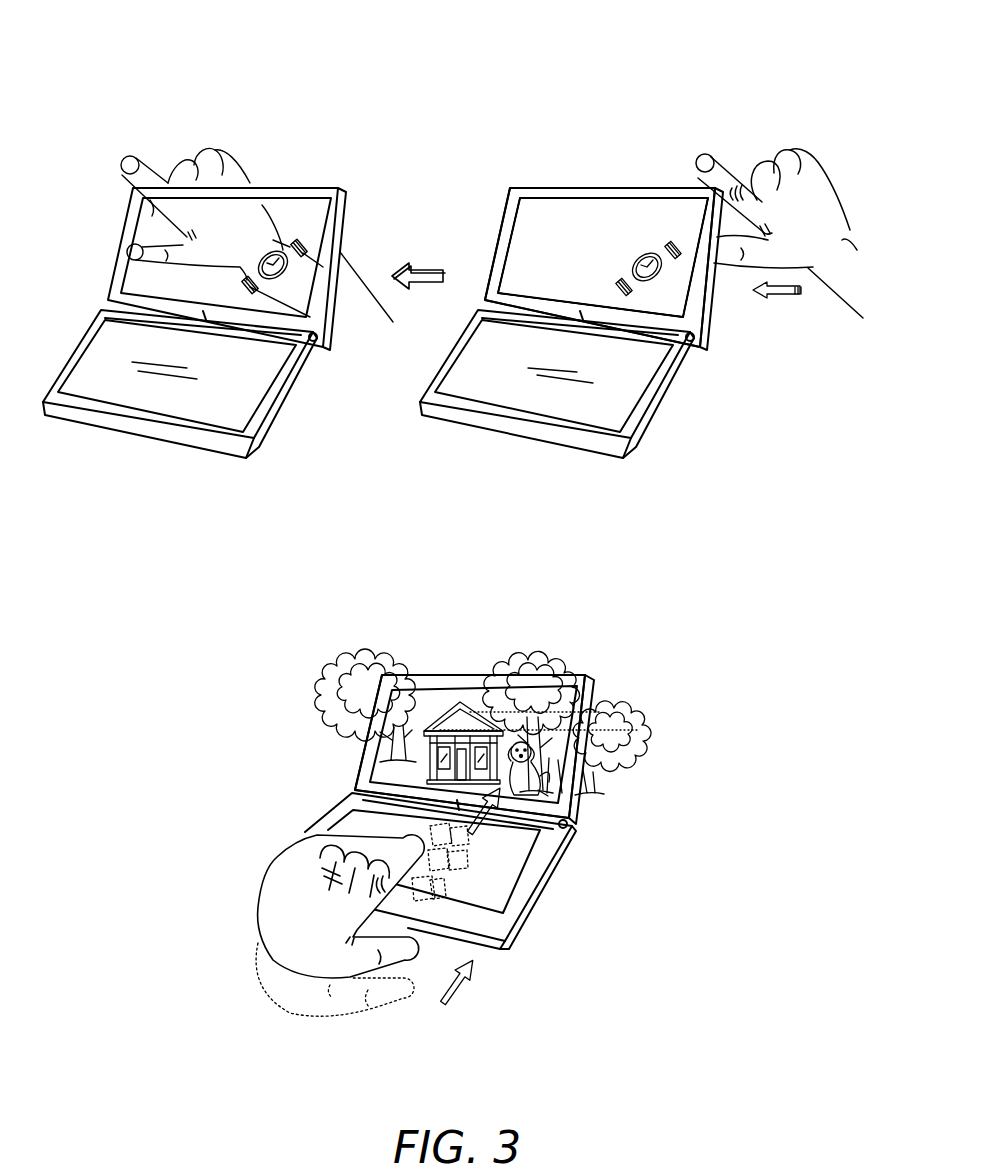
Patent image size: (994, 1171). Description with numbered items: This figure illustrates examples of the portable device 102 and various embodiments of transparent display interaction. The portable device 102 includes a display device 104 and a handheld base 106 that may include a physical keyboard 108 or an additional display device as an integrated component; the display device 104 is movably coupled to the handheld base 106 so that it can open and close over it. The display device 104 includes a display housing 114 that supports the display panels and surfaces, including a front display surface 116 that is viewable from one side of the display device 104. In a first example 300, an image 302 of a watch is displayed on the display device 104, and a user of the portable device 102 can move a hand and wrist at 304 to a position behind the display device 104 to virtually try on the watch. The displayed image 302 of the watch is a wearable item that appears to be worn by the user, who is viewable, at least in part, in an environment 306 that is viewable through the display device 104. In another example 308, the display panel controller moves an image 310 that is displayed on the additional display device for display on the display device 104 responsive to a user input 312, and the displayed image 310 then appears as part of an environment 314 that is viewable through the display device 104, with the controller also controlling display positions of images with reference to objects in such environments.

The first example 300 is at (733, 72).
The portable device 102 is at (700, 360).
The display device 104 is at (341, 250).
The handheld base 106 is at (535, 442).
The physical keyboard 108 is at (482, 378).
The display housing 114 is at (590, 220).
The front display surface 116 is at (541, 228).
The image of a watch 302 is at (675, 262).
The hand and wrist movement 304 is at (836, 327).
The environment 306 is at (305, 220).
The another example 308 is at (475, 637).
The image 310 is at (530, 792).
The user input 312 is at (496, 1016).
The environment 314 is at (338, 750).